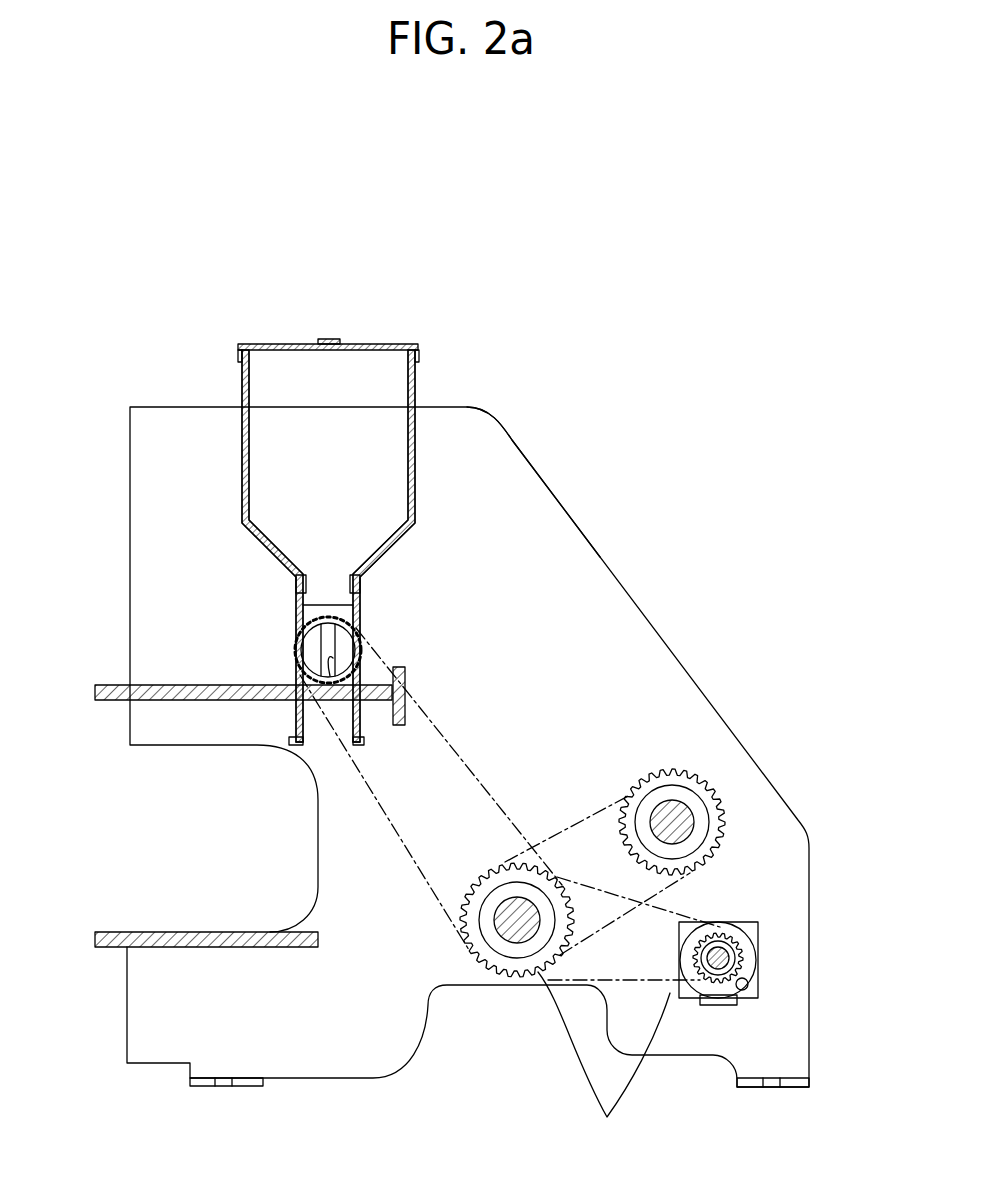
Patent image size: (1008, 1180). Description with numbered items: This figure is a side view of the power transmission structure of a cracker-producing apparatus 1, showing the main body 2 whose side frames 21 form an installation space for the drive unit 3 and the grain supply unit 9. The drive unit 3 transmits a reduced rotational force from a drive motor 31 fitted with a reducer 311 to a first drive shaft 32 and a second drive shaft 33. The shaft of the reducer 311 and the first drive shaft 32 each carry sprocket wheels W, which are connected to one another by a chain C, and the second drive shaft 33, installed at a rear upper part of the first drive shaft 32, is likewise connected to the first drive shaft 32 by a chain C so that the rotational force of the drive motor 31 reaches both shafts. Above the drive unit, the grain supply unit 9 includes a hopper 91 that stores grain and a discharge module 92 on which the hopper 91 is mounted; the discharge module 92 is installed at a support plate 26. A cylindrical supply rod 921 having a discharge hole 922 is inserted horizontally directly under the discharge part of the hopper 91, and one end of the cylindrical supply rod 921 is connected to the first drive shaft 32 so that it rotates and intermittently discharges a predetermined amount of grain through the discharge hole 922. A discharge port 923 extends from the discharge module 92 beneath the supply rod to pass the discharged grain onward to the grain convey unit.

The apparatus 1 is at (103, 223).
The main body 2 is at (613, 436).
The side frames 21 is at (495, 430).
The support plate 26 is at (100, 686).
The grain supply unit 9 is at (293, 542).
The hopper 91 is at (416, 378).
The discharge module 92 is at (357, 599).
The cylindrical supply rod 921 is at (362, 625).
The discharge hole 922 is at (405, 680).
The discharge port 923 is at (343, 745).
The chain C is at (490, 802).
The drive unit 3 is at (677, 920).
The drive motor 31 is at (758, 999).
The reducer 311 is at (760, 925).
The first drive shaft 32 is at (515, 943).
The second drive shaft 33 is at (674, 822).
The sprocket wheels W is at (604, 1059).